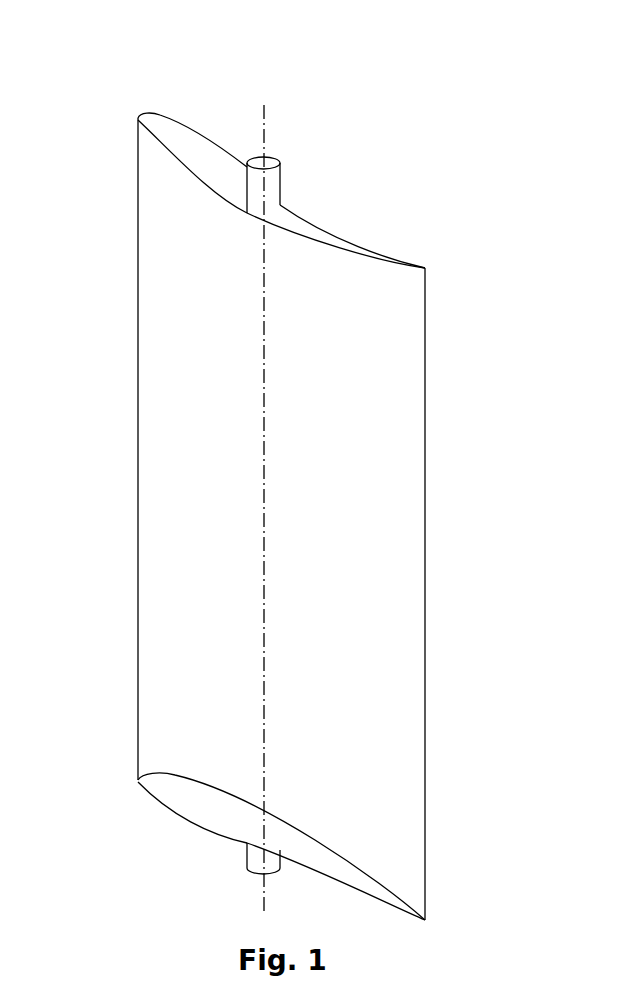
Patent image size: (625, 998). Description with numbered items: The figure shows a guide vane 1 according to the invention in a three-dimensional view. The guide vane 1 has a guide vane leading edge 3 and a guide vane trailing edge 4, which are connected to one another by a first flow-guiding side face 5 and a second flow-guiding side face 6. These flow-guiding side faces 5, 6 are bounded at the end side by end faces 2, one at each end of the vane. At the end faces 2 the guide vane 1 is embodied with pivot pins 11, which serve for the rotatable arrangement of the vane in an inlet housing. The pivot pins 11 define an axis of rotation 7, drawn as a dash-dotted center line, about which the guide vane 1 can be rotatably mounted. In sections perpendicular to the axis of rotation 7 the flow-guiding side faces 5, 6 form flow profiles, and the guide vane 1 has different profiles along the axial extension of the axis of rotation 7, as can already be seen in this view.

The guide vane 1 is at (106, 66).
The end faces 2 is at (207, 171).
The guide vane leading edge 3 is at (138, 305).
The guide vane trailing edge 4 is at (425, 342).
The first flow-guiding side face 5 is at (238, 606).
The second flow-guiding side face 6 is at (345, 214).
The axis of rotation 7 is at (265, 340).
The pivot pins 11 is at (276, 188).